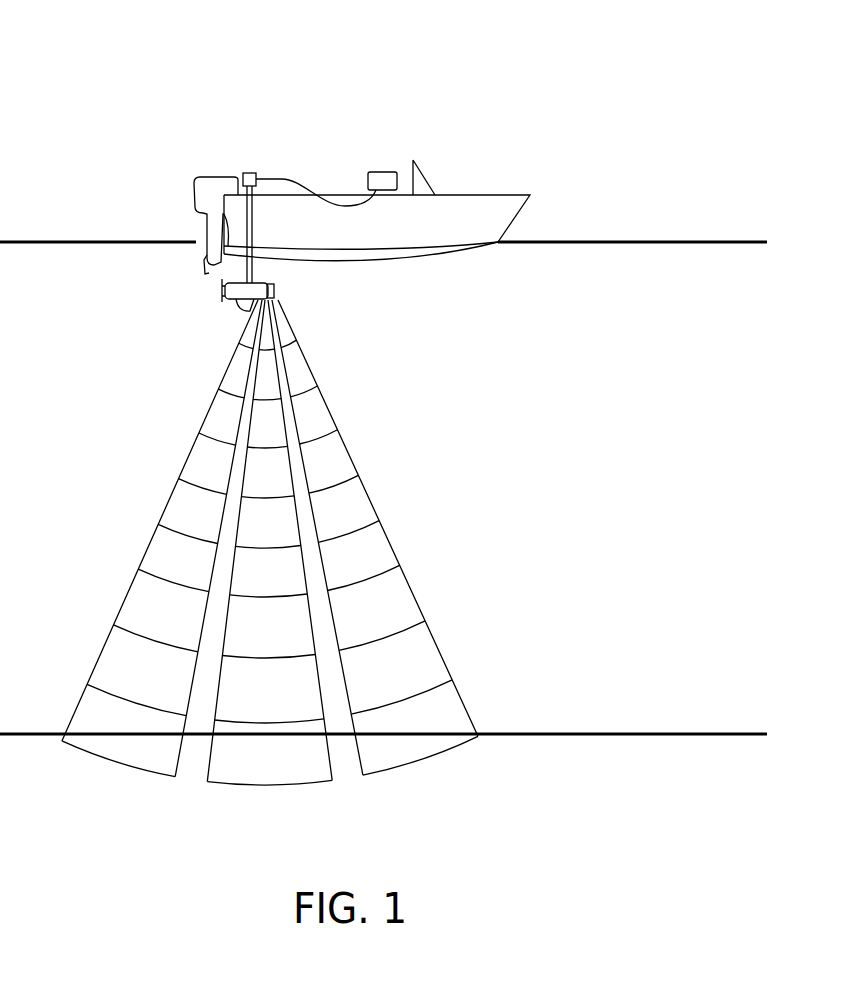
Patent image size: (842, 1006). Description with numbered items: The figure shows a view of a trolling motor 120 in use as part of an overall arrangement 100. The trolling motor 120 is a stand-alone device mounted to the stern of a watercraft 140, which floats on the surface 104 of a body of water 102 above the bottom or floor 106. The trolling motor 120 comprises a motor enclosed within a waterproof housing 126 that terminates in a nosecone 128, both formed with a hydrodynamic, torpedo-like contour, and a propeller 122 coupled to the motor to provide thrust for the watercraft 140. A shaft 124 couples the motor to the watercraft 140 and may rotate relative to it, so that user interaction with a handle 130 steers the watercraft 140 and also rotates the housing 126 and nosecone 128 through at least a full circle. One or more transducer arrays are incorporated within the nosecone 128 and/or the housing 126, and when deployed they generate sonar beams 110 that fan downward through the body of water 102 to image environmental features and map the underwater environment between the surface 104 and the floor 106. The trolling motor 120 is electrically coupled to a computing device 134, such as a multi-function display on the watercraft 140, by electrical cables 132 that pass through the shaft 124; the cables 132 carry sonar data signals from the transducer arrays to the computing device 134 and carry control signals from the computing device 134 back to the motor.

The sonar system 100 is at (80, 42).
The body of water 102 is at (755, 393).
The surface 104 is at (733, 235).
The bottom or floor 106 is at (750, 726).
The sonar beams 110 is at (345, 402).
The trolling motor 120 is at (251, 166).
The propeller 122 is at (222, 292).
The shaft 124 is at (254, 224).
The housing 126 is at (245, 306).
The nosecone 128 is at (275, 288).
The handle 130 is at (268, 178).
The electrical cables 132 is at (368, 208).
The computing device 134 is at (386, 172).
The watercraft 140 is at (449, 230).